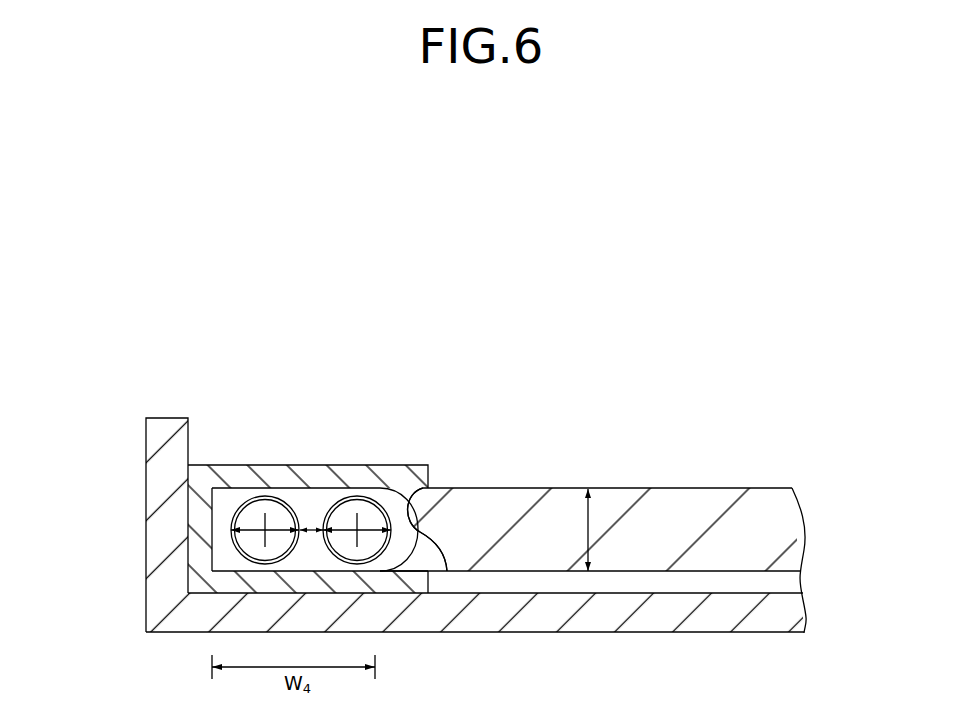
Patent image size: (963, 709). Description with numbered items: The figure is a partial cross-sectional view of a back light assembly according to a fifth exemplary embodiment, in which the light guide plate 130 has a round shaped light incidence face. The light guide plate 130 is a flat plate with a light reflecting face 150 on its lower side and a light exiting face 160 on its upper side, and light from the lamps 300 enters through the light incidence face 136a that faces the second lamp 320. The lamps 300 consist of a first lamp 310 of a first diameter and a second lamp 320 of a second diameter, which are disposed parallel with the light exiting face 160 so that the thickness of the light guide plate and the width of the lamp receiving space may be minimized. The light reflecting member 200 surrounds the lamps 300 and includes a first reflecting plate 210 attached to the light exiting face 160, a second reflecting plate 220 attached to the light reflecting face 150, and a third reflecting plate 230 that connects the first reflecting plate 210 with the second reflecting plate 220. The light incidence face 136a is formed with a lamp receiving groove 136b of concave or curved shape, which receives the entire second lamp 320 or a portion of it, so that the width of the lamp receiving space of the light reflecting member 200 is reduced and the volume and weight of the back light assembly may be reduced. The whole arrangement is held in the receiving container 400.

The light guide plate 130 is at (840, 545).
The light incidence face 136a is at (445, 572).
The lamp receiving groove 136b is at (413, 502).
The light reflecting face 150 is at (723, 573).
The light exiting face 160 is at (770, 489).
The light reflecting member 200 is at (228, 530).
The first reflecting plate 210 is at (240, 465).
The second reflecting plate 220 is at (233, 603).
The third reflecting plate 230 is at (202, 537).
The lamps 300 is at (311, 465).
The first lamp 310 is at (272, 503).
The second lamp 320 is at (352, 507).
The receiving container 400 is at (628, 620).